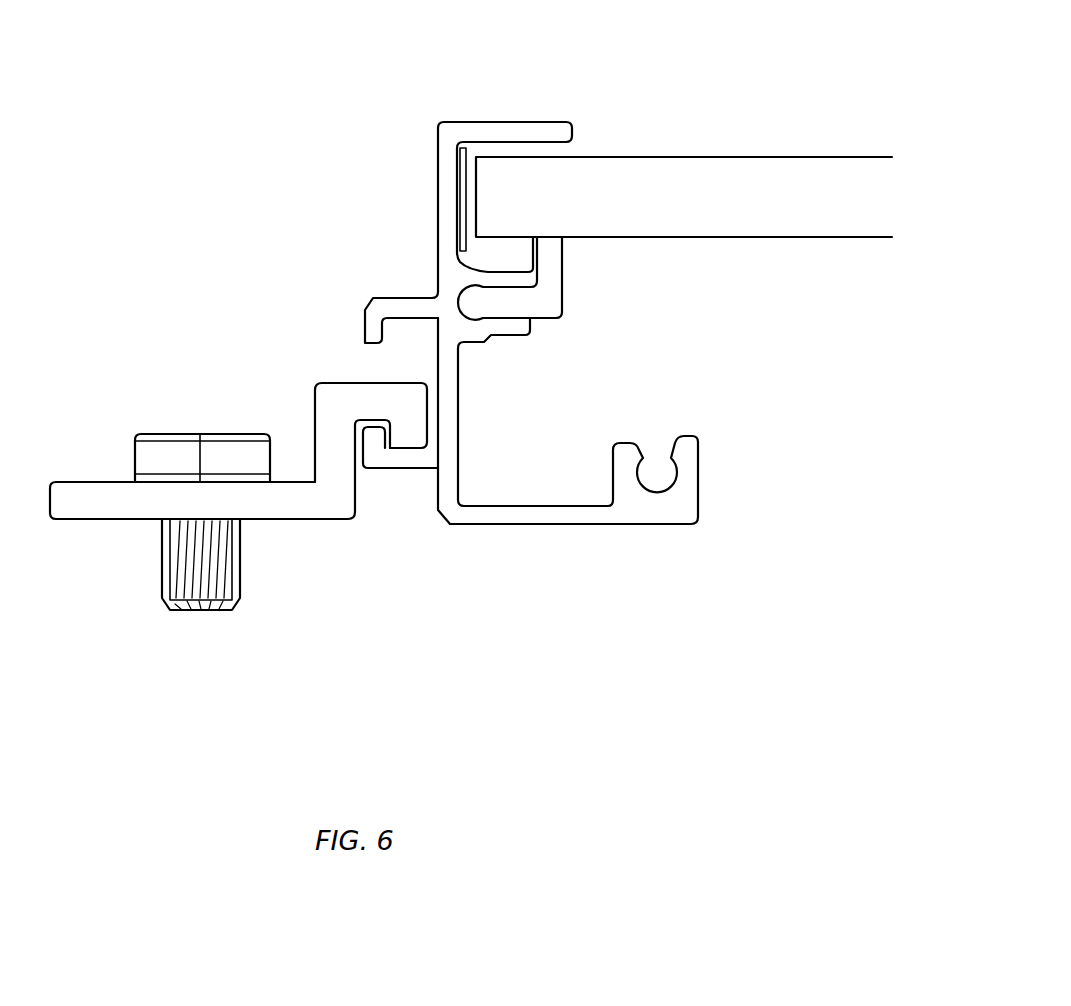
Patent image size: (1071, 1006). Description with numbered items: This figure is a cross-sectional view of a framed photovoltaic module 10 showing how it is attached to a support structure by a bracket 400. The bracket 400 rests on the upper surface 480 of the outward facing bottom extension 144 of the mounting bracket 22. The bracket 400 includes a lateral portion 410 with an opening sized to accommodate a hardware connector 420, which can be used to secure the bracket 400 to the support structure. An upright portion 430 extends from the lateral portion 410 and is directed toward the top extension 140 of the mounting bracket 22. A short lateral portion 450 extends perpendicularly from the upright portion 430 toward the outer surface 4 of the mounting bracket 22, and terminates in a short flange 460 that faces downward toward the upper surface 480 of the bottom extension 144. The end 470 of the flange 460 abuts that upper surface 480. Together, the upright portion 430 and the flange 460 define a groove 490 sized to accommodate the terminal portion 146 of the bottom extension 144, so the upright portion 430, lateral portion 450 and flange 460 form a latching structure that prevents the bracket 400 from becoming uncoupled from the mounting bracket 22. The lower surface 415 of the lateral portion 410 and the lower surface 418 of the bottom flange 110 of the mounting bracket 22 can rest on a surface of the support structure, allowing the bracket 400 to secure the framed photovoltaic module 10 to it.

The framed photovoltaic module 10 is at (420, 68).
The outer surface 4 is at (436, 498).
The mounting bracket 22 is at (477, 518).
The bottom flange 110 is at (602, 517).
The top extension 140 is at (393, 310).
The outward facing bottom extension 144 is at (397, 462).
The terminal portion 146 is at (360, 455).
The bracket 400 is at (333, 413).
The lateral portion 410 is at (140, 505).
The lower surface 415 is at (152, 518).
The lower surface 418 is at (560, 527).
The hardware connector 420 is at (172, 460).
The upright portion 430 is at (335, 451).
The short lateral portion 450 is at (365, 403).
The short flange 460 is at (408, 437).
The end 470 is at (417, 463).
The upper surface 480 is at (433, 447).
The groove 490 is at (418, 403).